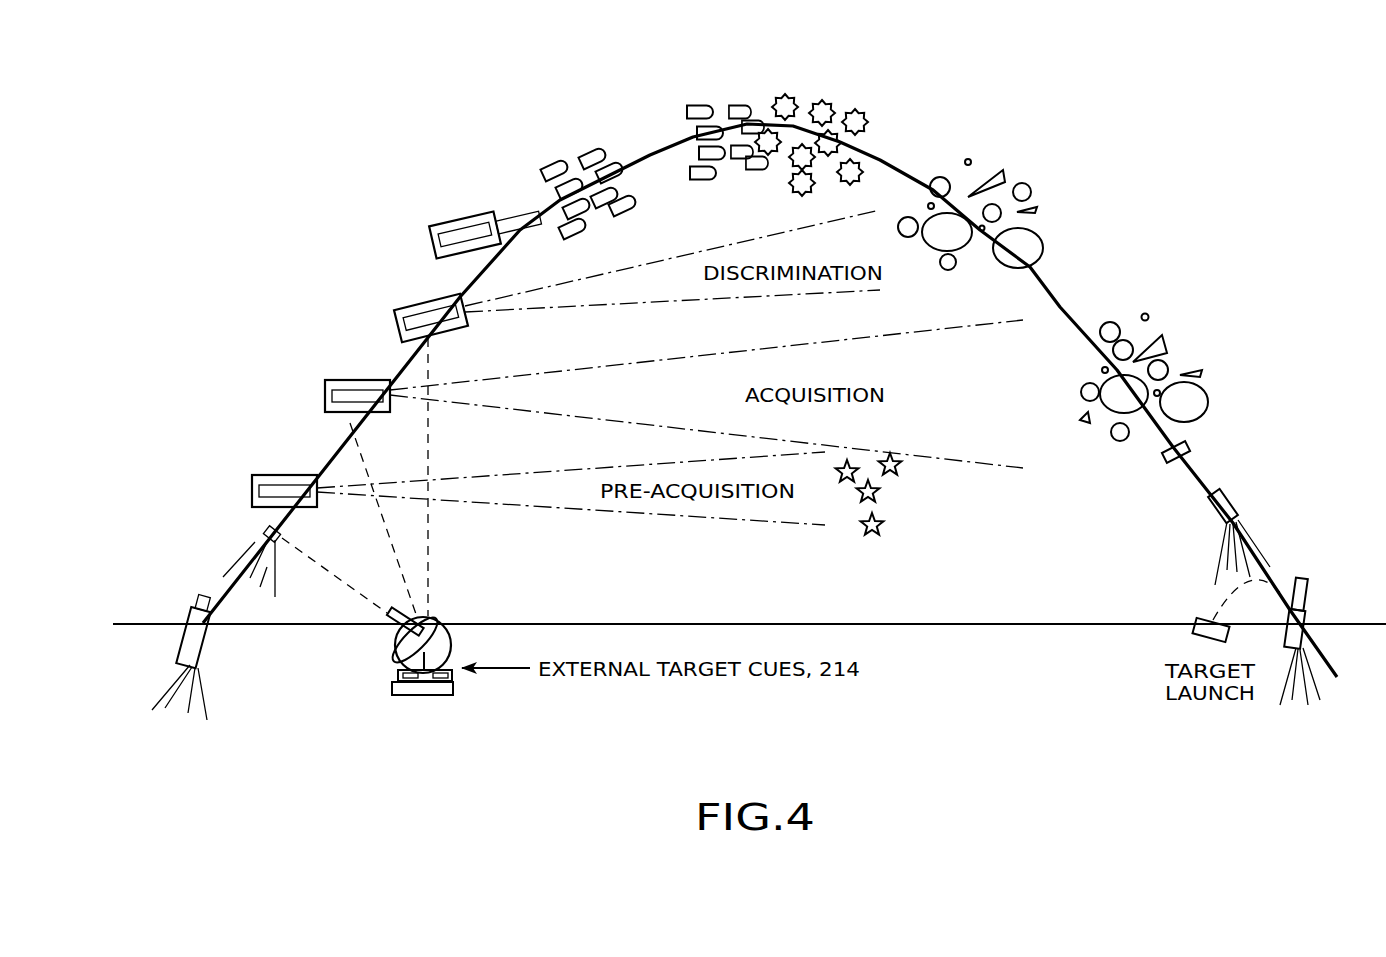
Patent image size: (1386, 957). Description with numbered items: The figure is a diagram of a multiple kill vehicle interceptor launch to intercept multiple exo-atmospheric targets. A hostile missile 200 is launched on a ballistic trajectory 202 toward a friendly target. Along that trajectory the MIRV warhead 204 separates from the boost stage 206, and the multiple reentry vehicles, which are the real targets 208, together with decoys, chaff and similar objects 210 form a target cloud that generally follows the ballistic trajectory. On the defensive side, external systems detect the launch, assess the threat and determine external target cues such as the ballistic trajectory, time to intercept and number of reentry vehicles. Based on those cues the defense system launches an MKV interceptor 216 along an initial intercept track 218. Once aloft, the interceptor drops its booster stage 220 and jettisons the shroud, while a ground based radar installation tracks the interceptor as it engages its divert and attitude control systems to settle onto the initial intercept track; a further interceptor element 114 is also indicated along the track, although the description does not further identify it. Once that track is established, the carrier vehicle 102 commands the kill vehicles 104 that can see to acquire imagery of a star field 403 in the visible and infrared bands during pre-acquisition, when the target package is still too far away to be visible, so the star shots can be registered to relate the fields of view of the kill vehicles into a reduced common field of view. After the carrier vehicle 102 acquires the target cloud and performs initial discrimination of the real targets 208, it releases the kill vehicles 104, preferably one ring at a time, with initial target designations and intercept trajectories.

The carrier vehicle (CV) 102 is at (245, 478).
The kill vehicles (KVs) 104 is at (322, 468).
The kill vehicle sensor stage 114 is at (400, 300).
The hostile missile 200 is at (1318, 602).
The ballistic trajectory 202 is at (1060, 302).
The MIRV warhead 204 is at (1170, 470).
The boost stage 206 is at (1240, 504).
The reentry vehicles (targets) 208 is at (1175, 340).
The decoys, chaff, etc. 210 is at (1210, 400).
The MKV interceptor 216 is at (210, 637).
The initial intercept track 218 is at (385, 365).
The booster stage 220 is at (255, 538).
The star field 403 is at (898, 490).